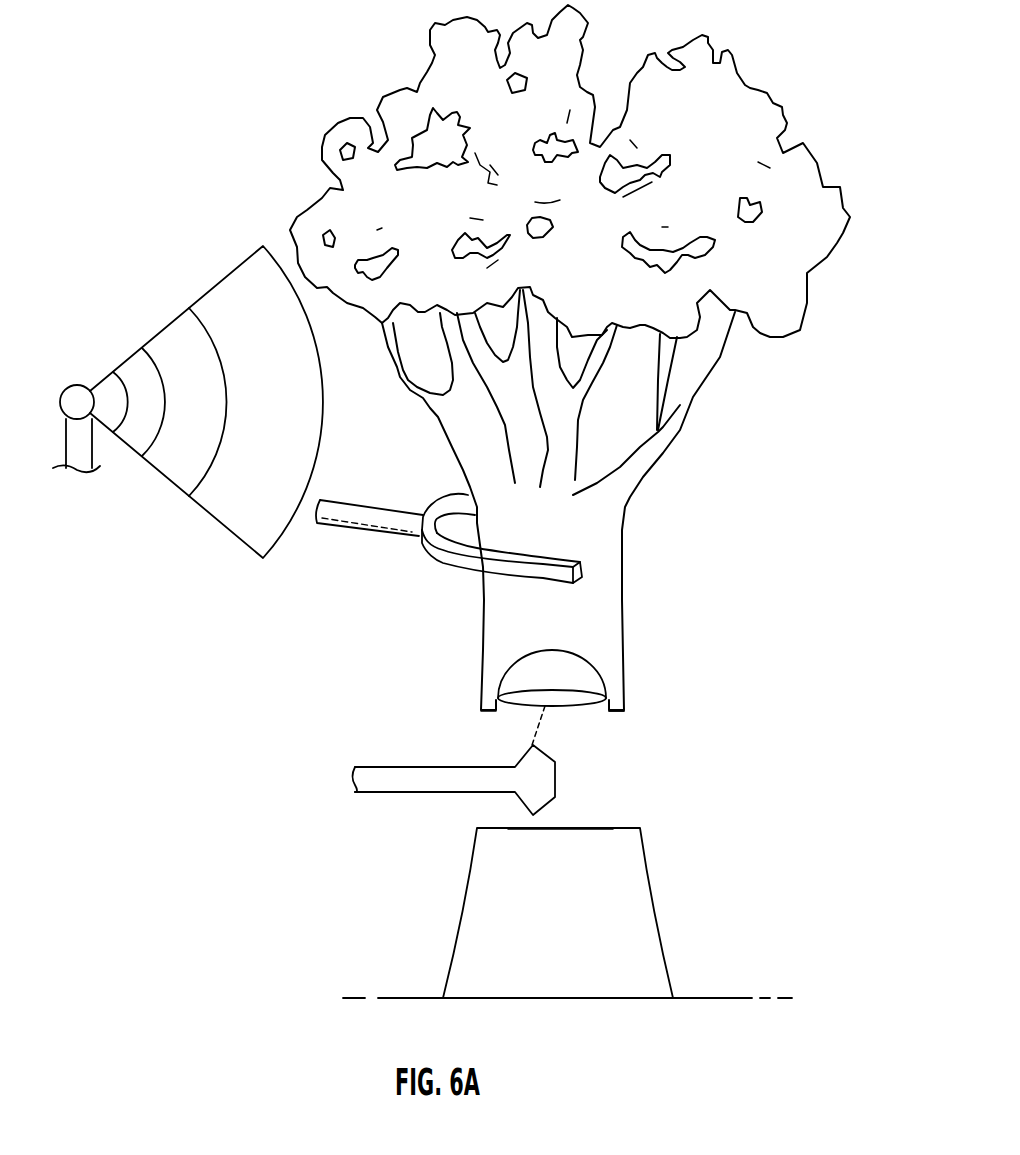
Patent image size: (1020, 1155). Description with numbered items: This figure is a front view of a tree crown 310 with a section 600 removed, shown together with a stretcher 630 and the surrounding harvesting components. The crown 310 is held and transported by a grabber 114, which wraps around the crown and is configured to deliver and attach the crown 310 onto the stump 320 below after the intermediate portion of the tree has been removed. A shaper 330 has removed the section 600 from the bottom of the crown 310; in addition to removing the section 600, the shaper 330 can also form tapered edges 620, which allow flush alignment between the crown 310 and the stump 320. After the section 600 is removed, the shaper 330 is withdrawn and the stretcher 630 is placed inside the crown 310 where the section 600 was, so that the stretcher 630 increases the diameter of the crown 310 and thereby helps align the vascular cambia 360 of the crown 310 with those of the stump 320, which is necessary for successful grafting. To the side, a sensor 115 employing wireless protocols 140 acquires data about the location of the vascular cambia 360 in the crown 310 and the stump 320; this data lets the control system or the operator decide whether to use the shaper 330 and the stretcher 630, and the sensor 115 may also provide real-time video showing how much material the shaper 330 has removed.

The crown 310 is at (779, 75).
The sensor 115 is at (75, 374).
The wireless protocols 140 is at (202, 281).
The grabber 114 is at (388, 500).
The section 600 is at (552, 678).
The stretcher 630 is at (567, 716).
The tapered edges 620 is at (623, 720).
The vascular cambia 360 is at (489, 698).
The shaper 330 is at (415, 756).
The stump 320 is at (682, 936).